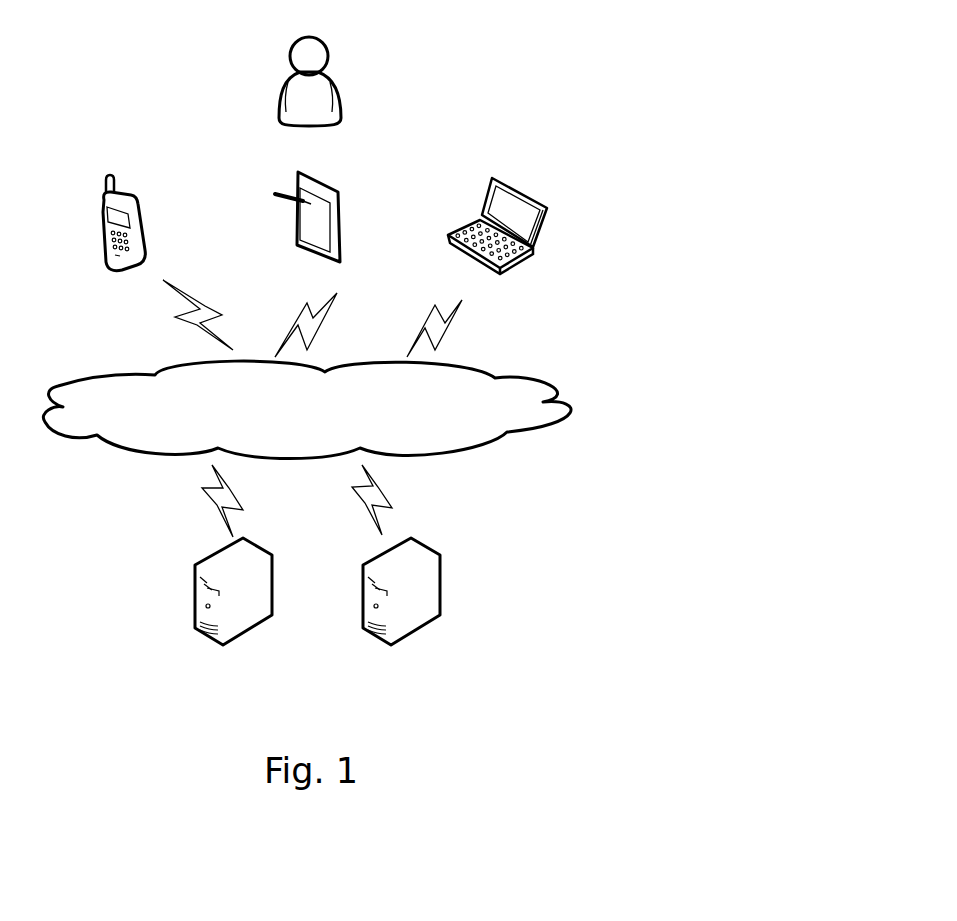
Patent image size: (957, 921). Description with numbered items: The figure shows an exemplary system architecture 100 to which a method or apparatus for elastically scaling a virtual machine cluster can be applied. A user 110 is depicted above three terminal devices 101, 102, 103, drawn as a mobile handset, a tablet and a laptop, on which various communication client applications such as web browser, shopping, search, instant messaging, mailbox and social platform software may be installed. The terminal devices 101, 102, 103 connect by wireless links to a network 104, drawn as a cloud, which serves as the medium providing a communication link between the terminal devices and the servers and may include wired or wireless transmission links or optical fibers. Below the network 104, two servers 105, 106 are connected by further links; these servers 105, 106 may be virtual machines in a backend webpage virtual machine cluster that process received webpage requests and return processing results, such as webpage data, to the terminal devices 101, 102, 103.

The system architecture 100 is at (573, 31).
The terminal device 101 is at (123, 238).
The terminal device 102 is at (307, 234).
The terminal device 103 is at (497, 241).
The network 104 is at (307, 408).
The server 105 is at (233, 607).
The server 106 is at (401, 607).
The user 110 is at (310, 95).